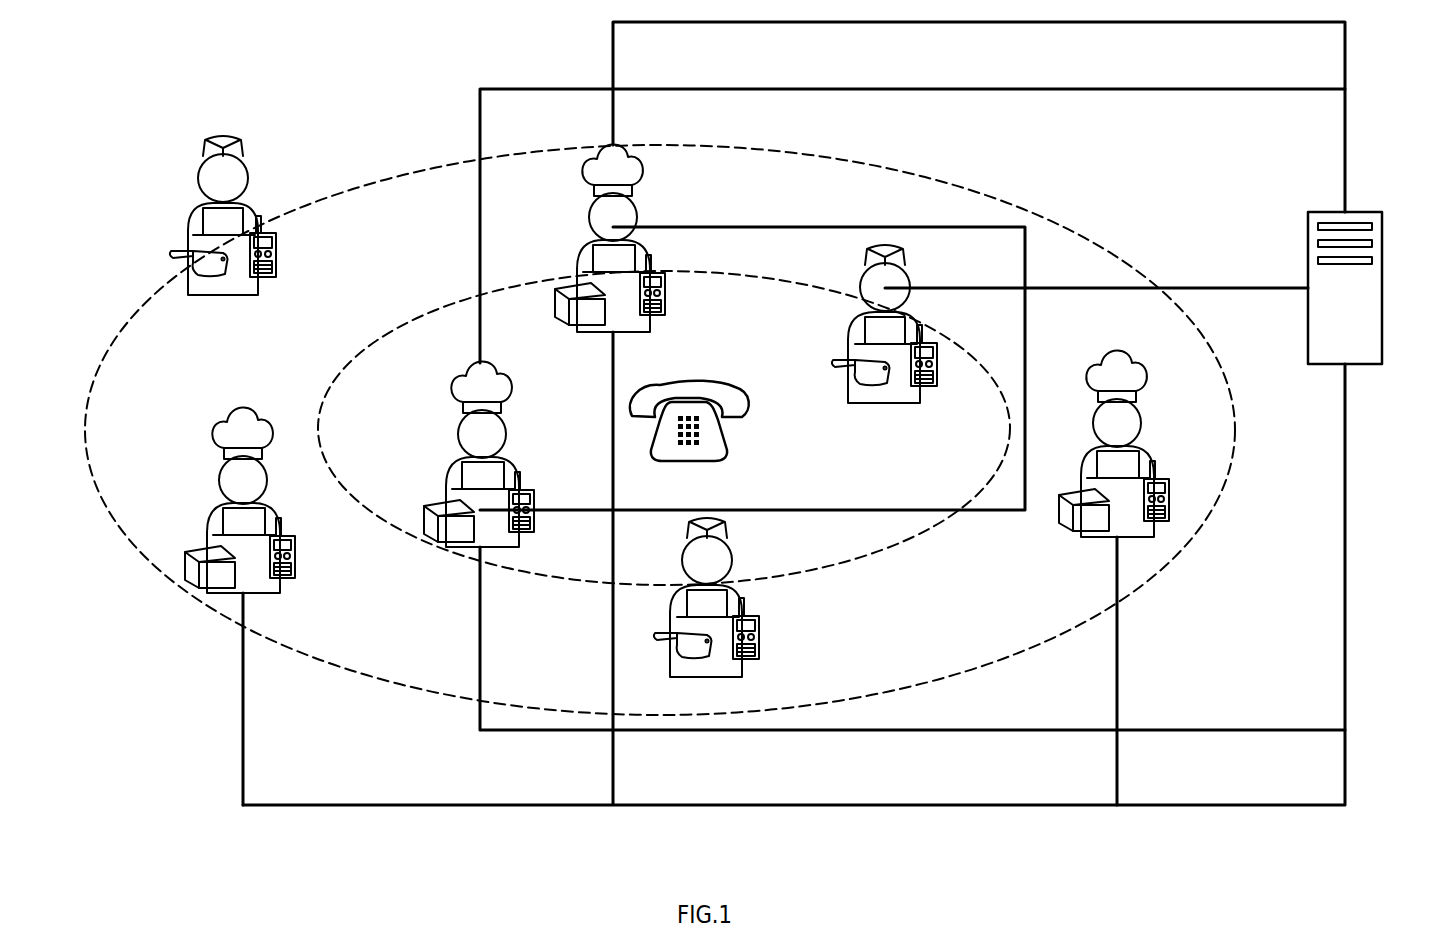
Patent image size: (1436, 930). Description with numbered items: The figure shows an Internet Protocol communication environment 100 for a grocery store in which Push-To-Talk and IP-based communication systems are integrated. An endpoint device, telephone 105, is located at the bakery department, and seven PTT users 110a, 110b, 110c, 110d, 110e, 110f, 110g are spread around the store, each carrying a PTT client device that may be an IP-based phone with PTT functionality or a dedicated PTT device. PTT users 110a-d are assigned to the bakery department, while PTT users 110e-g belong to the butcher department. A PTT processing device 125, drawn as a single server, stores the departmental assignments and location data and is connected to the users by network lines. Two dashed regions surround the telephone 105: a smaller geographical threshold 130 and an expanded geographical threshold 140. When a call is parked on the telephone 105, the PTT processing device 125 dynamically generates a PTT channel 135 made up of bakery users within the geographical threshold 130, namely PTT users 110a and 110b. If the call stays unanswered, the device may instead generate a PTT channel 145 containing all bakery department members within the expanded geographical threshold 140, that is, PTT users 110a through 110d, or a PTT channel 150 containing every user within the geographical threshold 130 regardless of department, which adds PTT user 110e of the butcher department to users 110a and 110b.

The IP communication environment 100 is at (172, 52).
The telephone 105 is at (722, 384).
The PTT user 110a is at (616, 240).
The PTT user 110b is at (487, 460).
The PTT user 110c is at (252, 504).
The PTT user 110d is at (1123, 429).
The PTT user 110e is at (903, 346).
The PTT user 110f is at (716, 600).
The PTT user 110g is at (231, 215).
The PTT processing device 125 is at (1383, 232).
The geographical threshold 130 is at (765, 275).
The PTT channel 135 is at (1345, 78).
The expanded geographical threshold 140 is at (985, 190).
The PTT channel 145 is at (1345, 453).
The PTT channel 150 is at (1268, 286).